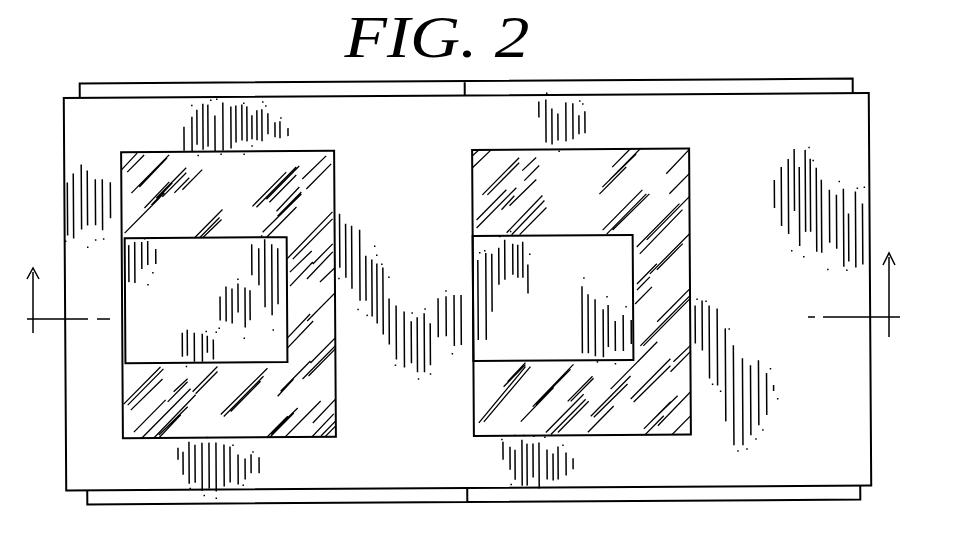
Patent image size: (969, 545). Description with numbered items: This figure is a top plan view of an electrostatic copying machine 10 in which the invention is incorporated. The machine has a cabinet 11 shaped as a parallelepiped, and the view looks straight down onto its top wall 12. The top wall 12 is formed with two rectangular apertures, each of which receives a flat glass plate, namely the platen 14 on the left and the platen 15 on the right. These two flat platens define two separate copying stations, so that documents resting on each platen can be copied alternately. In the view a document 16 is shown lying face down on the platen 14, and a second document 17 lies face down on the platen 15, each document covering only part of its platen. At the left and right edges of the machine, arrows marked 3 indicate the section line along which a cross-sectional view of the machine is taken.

The electrostatic copying machine 10 is at (200, 80).
The cabinet 11 is at (748, 84).
The top wall 12 is at (752, 271).
The platen 14 is at (208, 199).
The platen 15 is at (563, 198).
The document 16 is at (182, 314).
The document 17 is at (531, 314).
The section line for FIG. 3 is at (462, 276).